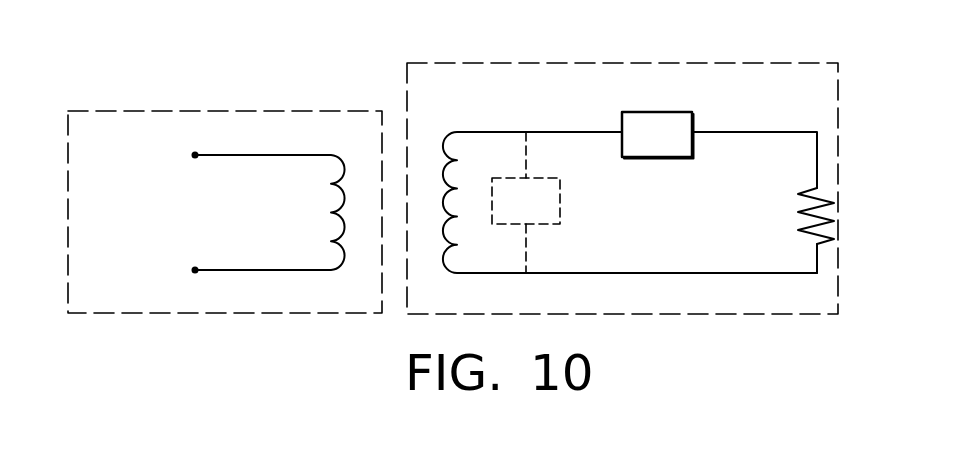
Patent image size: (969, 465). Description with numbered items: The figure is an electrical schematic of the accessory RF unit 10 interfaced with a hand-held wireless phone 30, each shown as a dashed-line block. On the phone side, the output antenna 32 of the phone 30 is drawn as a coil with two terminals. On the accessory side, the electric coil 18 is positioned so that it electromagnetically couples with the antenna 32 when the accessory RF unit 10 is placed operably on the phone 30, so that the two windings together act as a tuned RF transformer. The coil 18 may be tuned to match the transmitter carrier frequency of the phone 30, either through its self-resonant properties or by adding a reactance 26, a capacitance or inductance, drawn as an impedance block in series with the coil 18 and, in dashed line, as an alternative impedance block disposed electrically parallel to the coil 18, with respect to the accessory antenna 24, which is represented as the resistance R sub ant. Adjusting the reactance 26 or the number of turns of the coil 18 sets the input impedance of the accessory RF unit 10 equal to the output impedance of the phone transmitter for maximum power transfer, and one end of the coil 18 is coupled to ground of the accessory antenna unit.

The accessory RF unit 10 is at (796, 62).
The electric coil 18 is at (467, 131).
The accessory antenna 24 is at (822, 197).
The reactance 26 is at (650, 112).
The wireless phone 30 is at (180, 106).
The antenna 32 is at (275, 156).